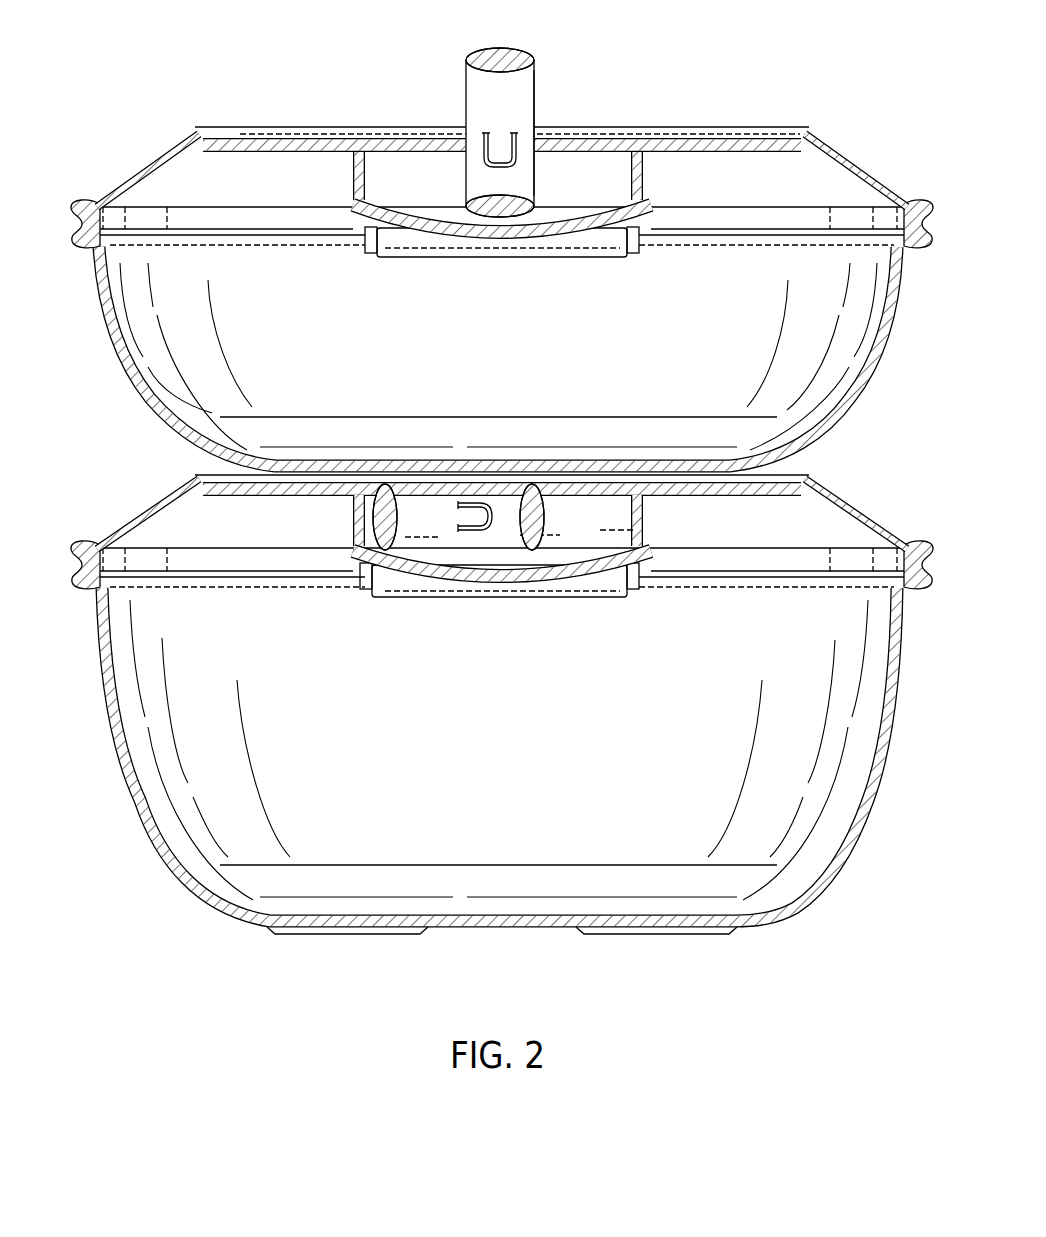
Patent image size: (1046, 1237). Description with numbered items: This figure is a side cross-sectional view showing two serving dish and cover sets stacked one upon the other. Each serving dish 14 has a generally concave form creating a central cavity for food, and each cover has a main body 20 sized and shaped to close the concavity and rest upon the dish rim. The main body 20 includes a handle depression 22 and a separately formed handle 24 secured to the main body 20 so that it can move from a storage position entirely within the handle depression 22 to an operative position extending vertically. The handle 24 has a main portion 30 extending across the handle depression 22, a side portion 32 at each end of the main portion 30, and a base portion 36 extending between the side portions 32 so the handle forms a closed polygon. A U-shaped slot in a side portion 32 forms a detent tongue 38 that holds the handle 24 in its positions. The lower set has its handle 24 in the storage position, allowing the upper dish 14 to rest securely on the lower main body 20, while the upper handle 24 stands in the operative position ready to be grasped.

The serving dish 14 is at (152, 420).
The main body 20 is at (855, 165).
The handle depression 22 is at (575, 205).
The handle 24 is at (478, 98).
The main portion 30 is at (493, 55).
The side portion 32 is at (510, 100).
The base portion 36 is at (505, 212).
The detent tongue 38 is at (497, 154).